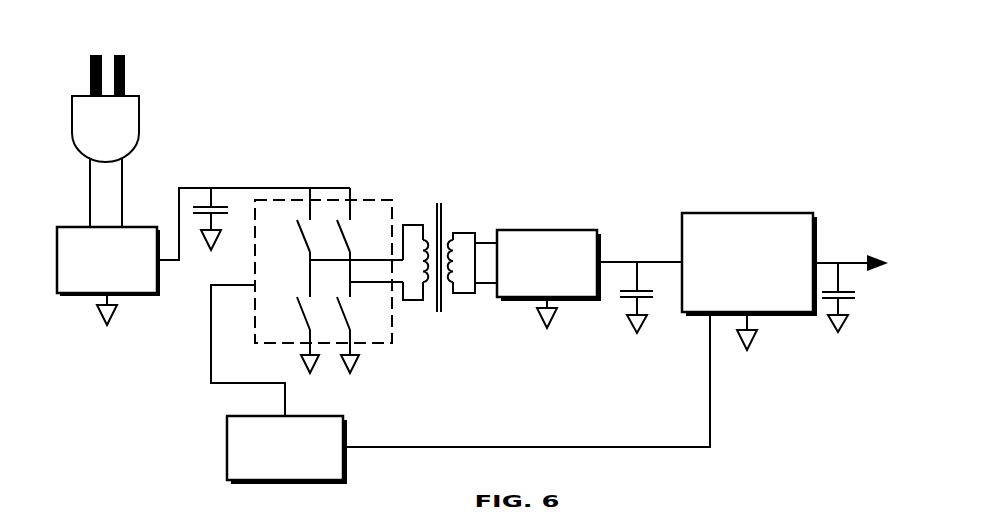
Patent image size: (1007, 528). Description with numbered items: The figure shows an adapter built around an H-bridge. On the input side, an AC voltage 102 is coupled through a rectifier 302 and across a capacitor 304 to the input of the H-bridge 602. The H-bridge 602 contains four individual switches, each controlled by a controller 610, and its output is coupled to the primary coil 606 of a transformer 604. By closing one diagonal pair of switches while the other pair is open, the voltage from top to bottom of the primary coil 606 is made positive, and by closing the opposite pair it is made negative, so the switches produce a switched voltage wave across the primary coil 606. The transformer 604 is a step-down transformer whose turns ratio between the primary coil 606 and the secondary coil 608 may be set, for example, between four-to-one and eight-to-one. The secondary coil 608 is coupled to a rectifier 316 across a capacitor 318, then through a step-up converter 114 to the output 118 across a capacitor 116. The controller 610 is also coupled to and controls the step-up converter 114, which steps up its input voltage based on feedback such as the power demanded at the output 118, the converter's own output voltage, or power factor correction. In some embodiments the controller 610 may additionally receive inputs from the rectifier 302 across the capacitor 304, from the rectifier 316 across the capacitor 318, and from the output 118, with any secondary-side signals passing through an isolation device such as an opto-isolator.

The AC voltage 102 is at (146, 90).
The rectifier 302 is at (203, 256).
The capacitor 304 is at (196, 200).
The H-bridge 602 is at (385, 348).
The transformer 604 is at (433, 203).
The primary coil 606 is at (407, 195).
The secondary coil 608 is at (465, 223).
The rectifier 316 is at (589, 279).
The capacitor 318 is at (613, 305).
The step-up converter 114 is at (580, 330).
The output 118 is at (870, 243).
The capacitor 116 is at (822, 313).
The controller 610 is at (287, 450).